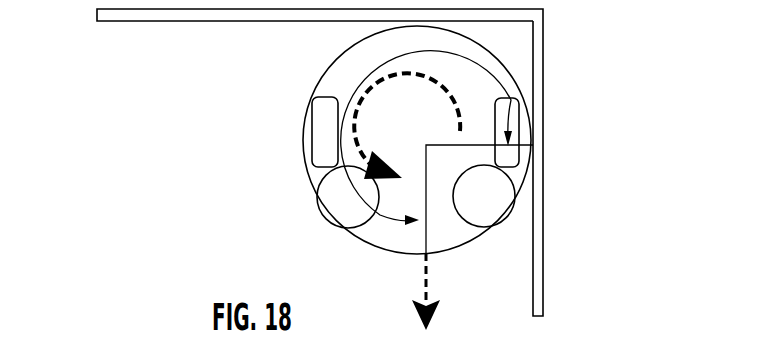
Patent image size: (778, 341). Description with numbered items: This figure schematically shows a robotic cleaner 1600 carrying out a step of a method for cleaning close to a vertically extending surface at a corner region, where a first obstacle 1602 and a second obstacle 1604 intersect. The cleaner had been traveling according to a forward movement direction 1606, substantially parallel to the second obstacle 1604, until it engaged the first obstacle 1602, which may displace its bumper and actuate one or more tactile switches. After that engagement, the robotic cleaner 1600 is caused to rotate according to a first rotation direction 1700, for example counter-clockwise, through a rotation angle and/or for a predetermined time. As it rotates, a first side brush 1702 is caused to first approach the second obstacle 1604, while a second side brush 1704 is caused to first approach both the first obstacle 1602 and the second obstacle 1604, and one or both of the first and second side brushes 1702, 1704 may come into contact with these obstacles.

The robotic cleaner 1600 is at (262, 85).
The first obstacle 1602 is at (545, 83).
The second obstacle 1604 is at (113, 22).
The forward movement direction 1606 is at (415, 313).
The first rotation direction 1700 is at (376, 172).
The first side brush 1702 is at (497, 202).
The second side brush 1704 is at (338, 208).